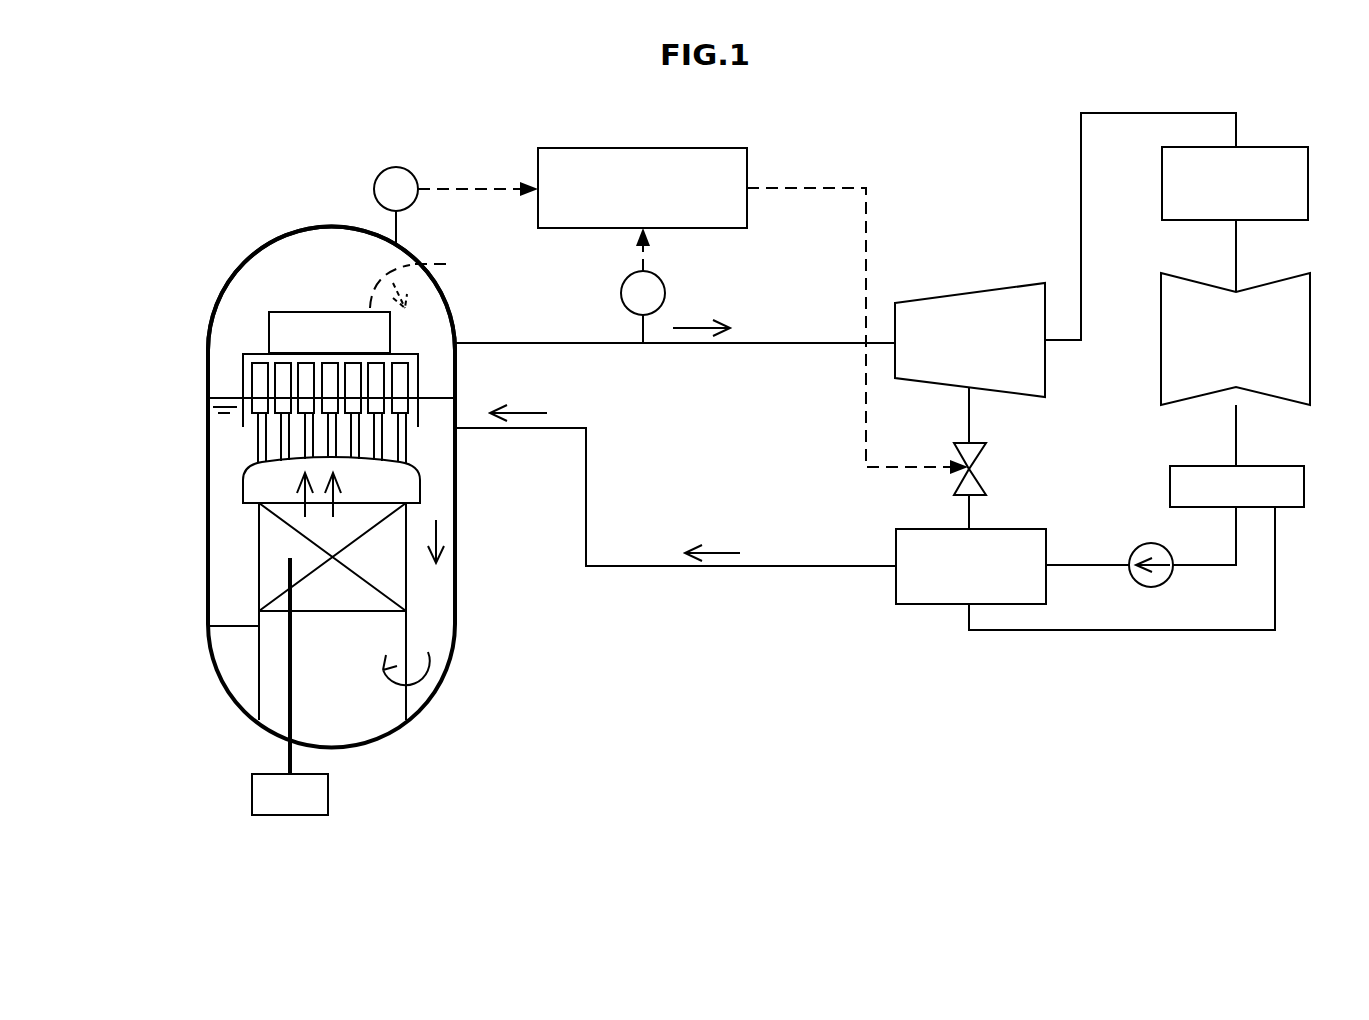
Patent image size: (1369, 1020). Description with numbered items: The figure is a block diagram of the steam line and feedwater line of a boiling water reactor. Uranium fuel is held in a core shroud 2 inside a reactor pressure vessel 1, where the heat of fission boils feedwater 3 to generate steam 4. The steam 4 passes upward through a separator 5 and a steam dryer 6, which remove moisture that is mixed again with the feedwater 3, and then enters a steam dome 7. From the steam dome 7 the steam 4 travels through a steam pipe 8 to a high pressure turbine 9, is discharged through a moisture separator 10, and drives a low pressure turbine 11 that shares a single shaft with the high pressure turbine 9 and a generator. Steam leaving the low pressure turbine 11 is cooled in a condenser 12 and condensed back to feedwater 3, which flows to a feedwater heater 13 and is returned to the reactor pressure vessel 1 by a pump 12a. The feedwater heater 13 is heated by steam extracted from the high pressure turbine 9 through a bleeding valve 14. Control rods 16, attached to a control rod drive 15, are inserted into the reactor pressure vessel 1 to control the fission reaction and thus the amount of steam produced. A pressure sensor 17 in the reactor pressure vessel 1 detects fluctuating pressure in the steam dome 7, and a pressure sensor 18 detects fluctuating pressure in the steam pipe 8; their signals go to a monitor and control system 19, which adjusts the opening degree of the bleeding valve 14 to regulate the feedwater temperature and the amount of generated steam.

The reactor pressure vessel 1 is at (438, 688).
The core shroud 2 is at (407, 580).
The feedwater 3 is at (533, 428).
The steam 4 is at (462, 278).
The separator 5 is at (258, 382).
The steam dryer 6 is at (313, 312).
The steam dome 7 is at (260, 248).
The steam pipe 8 is at (568, 343).
The high pressure turbine 9 is at (945, 303).
The moisture separator 10 is at (1268, 147).
The low pressure turbine 11 is at (1274, 282).
The condenser 12 is at (1285, 466).
The pump 12a is at (1152, 588).
The feedwater heater 13 is at (932, 529).
The bleeding valve 14 is at (978, 458).
The control rod drive 15 is at (328, 793).
The control rods 16 is at (288, 692).
The pressure sensor 17 is at (396, 167).
The pressure sensor 18 is at (660, 273).
The monitor and control system 19 is at (668, 148).